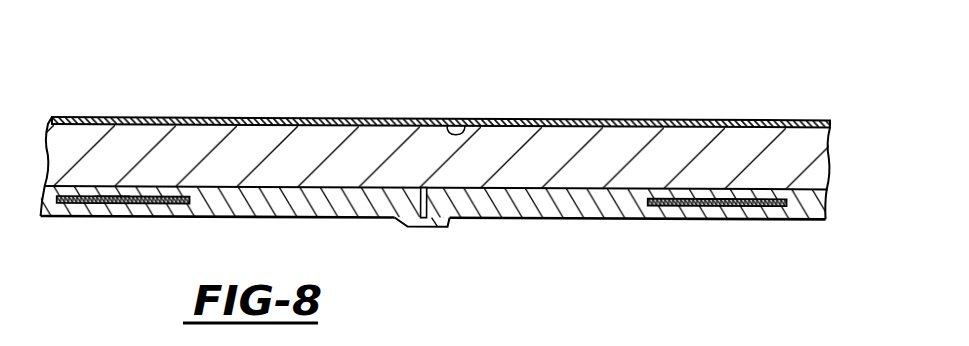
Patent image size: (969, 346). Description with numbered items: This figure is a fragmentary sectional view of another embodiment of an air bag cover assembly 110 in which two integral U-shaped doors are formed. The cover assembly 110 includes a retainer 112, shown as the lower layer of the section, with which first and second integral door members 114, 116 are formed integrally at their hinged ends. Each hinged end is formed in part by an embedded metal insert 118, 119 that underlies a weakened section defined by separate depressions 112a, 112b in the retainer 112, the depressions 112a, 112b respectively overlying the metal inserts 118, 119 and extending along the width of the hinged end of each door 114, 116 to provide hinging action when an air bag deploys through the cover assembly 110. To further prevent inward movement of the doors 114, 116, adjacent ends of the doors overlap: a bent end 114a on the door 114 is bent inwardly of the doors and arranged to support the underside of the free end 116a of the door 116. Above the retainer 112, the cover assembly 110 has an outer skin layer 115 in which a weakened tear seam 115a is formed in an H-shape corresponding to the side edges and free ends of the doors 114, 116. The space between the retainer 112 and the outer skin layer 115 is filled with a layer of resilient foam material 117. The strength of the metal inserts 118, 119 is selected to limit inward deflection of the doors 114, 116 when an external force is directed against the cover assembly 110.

The cover assembly 110 is at (305, 111).
The retainer 112 is at (71, 209).
The depression 112a is at (110, 195).
The depression 112b is at (716, 198).
The first integral door member 114 is at (353, 207).
The bent end 114a is at (433, 227).
The outer skin layer 115 is at (243, 116).
The weakened tear seam 115a is at (450, 117).
The second integral door member 116 is at (597, 212).
The free end 116a is at (427, 187).
The layer of resilient foam material 117 is at (97, 142).
The metal insert 118 is at (170, 205).
The metal insert 119 is at (703, 218).